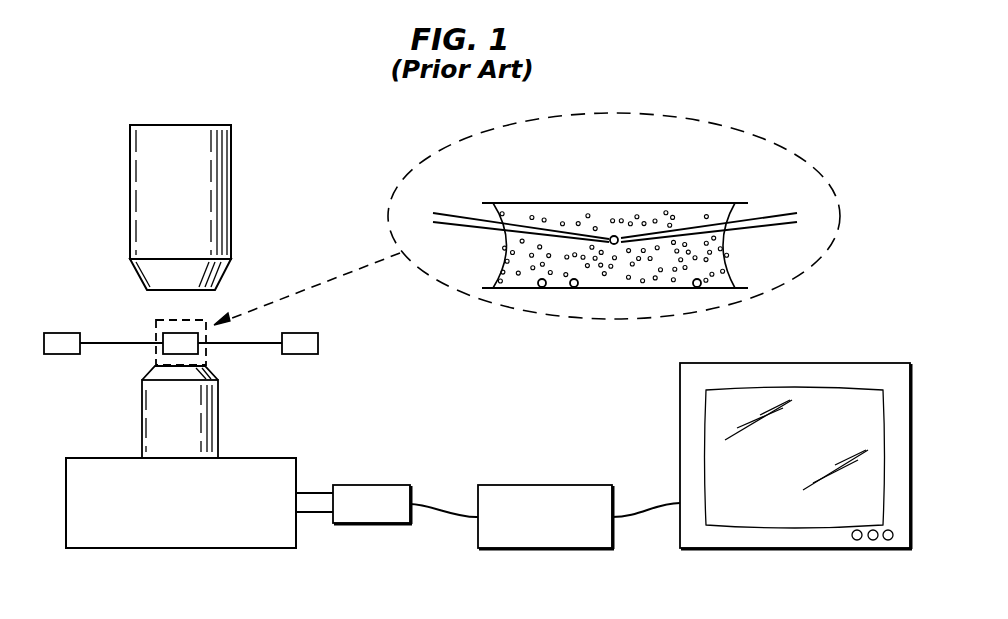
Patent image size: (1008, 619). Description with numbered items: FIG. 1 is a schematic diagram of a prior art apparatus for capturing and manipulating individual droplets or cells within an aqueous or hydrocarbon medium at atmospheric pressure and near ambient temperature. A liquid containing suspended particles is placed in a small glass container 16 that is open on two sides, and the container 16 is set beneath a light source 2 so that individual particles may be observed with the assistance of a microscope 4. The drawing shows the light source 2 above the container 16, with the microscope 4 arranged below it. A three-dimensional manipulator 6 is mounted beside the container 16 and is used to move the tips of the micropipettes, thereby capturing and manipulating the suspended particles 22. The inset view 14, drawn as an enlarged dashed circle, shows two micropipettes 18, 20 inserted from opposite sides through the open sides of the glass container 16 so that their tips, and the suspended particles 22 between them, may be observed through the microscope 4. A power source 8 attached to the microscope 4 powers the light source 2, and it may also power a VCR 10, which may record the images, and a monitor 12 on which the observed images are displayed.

The light source 2 is at (180, 207).
The microscope 4 is at (181, 457).
The three-dimensional manipulator 6 is at (53, 333).
The power source 8 is at (363, 485).
The VCR 10 is at (572, 485).
The monitor 12 is at (853, 363).
The inset view 14 is at (816, 172).
The glass container 16 is at (669, 203).
The micropipette 18 is at (447, 213).
The micropipette 20 is at (772, 213).
The suspended particles 22 is at (612, 228).